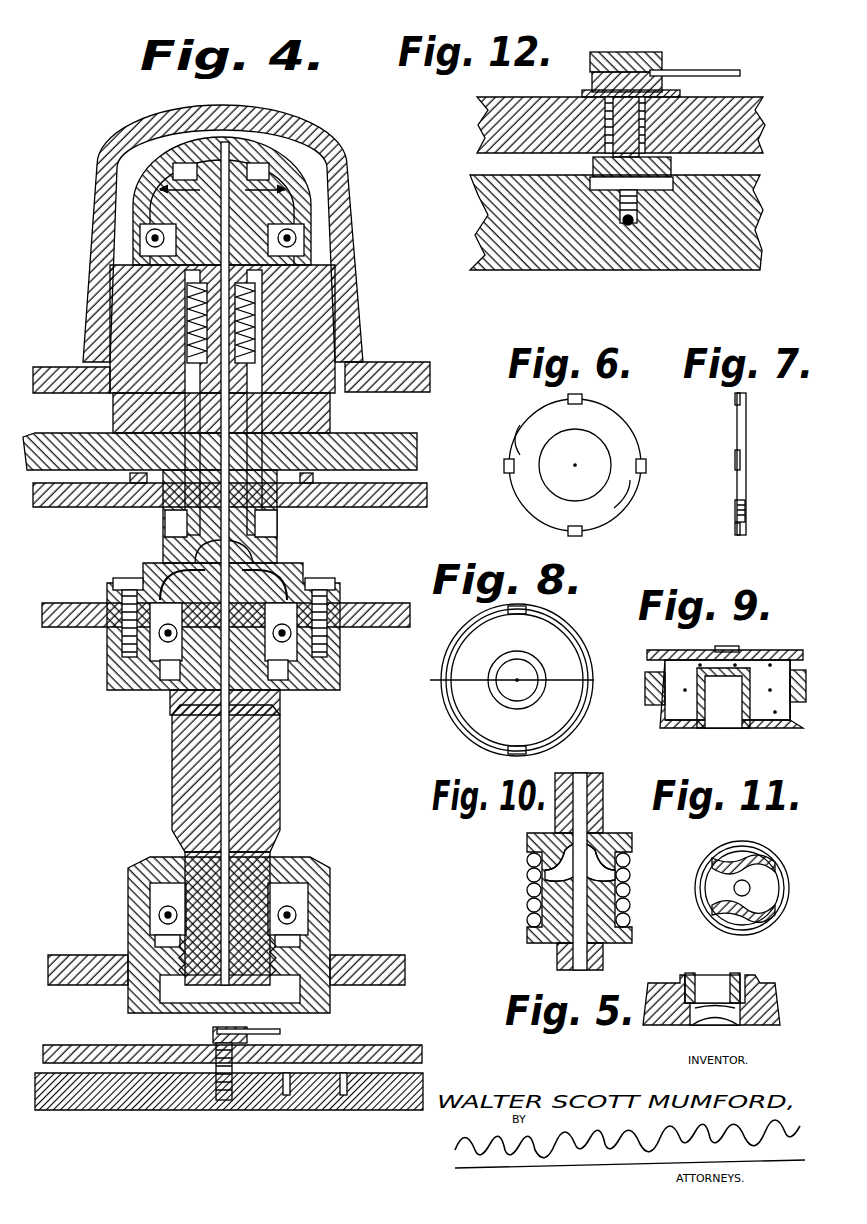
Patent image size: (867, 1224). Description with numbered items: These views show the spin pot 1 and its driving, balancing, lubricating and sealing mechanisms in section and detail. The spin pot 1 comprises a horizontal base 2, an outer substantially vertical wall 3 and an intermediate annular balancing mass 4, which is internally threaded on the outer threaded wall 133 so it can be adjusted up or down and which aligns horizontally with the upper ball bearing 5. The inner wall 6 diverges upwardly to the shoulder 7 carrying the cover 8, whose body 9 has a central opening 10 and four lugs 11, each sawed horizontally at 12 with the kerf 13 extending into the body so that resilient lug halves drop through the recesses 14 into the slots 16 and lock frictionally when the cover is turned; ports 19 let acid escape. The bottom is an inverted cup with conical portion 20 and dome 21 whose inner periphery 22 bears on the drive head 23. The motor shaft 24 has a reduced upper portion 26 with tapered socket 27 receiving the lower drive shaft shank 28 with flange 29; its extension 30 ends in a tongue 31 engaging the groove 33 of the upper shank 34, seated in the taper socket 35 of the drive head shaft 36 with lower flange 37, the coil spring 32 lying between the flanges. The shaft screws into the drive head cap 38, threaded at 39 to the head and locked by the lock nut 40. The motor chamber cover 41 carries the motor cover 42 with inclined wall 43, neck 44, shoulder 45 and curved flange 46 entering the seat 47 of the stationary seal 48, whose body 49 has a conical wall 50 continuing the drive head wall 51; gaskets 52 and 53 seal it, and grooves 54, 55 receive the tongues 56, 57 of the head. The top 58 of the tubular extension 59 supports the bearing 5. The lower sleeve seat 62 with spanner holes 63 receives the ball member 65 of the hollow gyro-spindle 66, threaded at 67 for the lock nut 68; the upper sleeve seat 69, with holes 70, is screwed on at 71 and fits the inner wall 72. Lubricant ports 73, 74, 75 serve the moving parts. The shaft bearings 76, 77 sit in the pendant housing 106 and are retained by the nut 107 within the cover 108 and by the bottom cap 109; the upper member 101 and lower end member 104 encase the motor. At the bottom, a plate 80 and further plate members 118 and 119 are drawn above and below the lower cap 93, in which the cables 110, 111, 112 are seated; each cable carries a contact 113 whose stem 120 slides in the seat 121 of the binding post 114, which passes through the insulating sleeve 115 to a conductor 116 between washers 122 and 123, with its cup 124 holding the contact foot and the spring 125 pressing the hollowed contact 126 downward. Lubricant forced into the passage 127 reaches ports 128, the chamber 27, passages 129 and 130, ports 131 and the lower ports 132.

In FIG. 9, the spin pot 1 is at (650, 655).
In FIG. 4, the horizontal base 2 is at (400, 390).
In FIG. 8, the horizontal base 2 is at (535, 718).
In FIG. 9, the horizontal base 2 is at (710, 700).
In FIG. 8, the outer substantially vertical wall 3 is at (470, 630).
In FIG. 9, the outer substantially vertical wall 3 is at (662, 725).
In FIG. 8, the annular balancing mass 4 is at (578, 645).
In FIG. 9, the annular balancing mass 4 is at (645, 690).
In FIG. 4, the upper ball bearing 5 is at (120, 200).
In FIG. 6, the inner wall 6 is at (612, 415).
In FIG. 8, the inner wall 6 is at (498, 705).
In FIG. 9, the inner wall 6 is at (730, 687).
In FIG. 8, the annular ledge or shoulder 7 is at (470, 700).
In FIG. 9, the annular ledge or shoulder 7 is at (672, 650).
In FIG. 7, the spin pot cover 8 is at (749, 464).
In FIG. 6, the cover body 9 is at (604, 500).
In FIG. 7, the cover body 9 is at (746, 495).
In FIG. 8, the cover body 9 is at (520, 675).
In FIG. 6, the central opening 10 is at (592, 435).
In FIG. 10, the central opening 10 is at (543, 871).
In FIG. 6, the lugs 11 is at (582, 398).
In FIG. 7, the lugs 11 is at (746, 460).
In FIG. 10, the lugs 11 is at (527, 882).
In FIG. 7, the horizontal saw cut 12 is at (746, 395).
In FIG. 6, the kerf extension 13 is at (520, 425).
In FIG. 8, the vertical recesses 14 is at (516, 614).
In FIG. 9, the vertical recesses 14 is at (652, 650).
In FIG. 8, the horizontal slots 16 is at (526, 610).
In FIG. 9, the horizontal slots 16 is at (730, 648).
In FIG. 9, the ports 19 is at (795, 705).
In FIG. 4, the conical upwardly converging portion 20 is at (95, 175).
In FIG. 8, the conical upwardly converging portion 20 is at (540, 690).
In FIG. 9, the conical upwardly converging portion 20 is at (700, 728).
In FIG. 4, the dome shaped portion 21 is at (222, 140).
In FIG. 8, the dome shaped portion 21 is at (517, 680).
In FIG. 9, the dome shaped portion 21 is at (723, 698).
In FIG. 4, the inner periphery 22 is at (395, 364).
In FIG. 9, the inner periphery 22 is at (720, 730).
In FIG. 4, the drive head 23 is at (340, 220).
In FIG. 4, the motor shaft 24 is at (282, 830).
In FIG. 4, the reduced upper portion of motor shaft 26 is at (278, 530).
In FIG. 4, the tapered seat or socket 27 is at (170, 510).
In FIG. 4, the lower drive shaft shank 28 is at (140, 478).
In FIG. 10, the lower drive shaft shank 28 is at (527, 940).
In FIG. 4, the flange 29 is at (130, 420).
In FIG. 10, the flange 29 is at (632, 925).
In FIG. 4, the extension 30 is at (340, 305).
In FIG. 10, the extension 30 is at (527, 915).
In FIG. 4, the tongue 31 is at (110, 320).
In FIG. 10, the tongue 31 is at (632, 855).
In FIG. 11, the tongue 31 is at (782, 898).
In FIG. 4, the coil spring 32 is at (70, 368).
In FIG. 10, the coil spring 32 is at (527, 852).
In FIG. 11, the coil spring 32 is at (782, 862).
In FIG. 4, the groove 33 is at (330, 286).
In FIG. 10, the groove 33 is at (595, 830).
In FIG. 4, the upper drive shaft shank 34 is at (330, 185).
In FIG. 10, the upper drive shaft shank 34 is at (592, 778).
In FIG. 4, the taper socket 35 is at (300, 110).
In FIG. 4, the drive head shaft 36 is at (340, 170).
In FIG. 4, the lower flange 37 is at (292, 135).
In FIG. 10, the lower flange 37 is at (628, 840).
In FIG. 4, the drive head cap 38 is at (160, 160).
In FIG. 4, the threaded engagement 39 is at (345, 190).
In FIG. 4, the lock nut 40 is at (318, 118).
In FIG. 4, the upper metallic plate or disc 41 is at (160, 512).
In FIG. 4, the motor cover 42 is at (115, 400).
In FIG. 4, the inclined top wall 43 is at (145, 465).
In FIG. 4, the neck 44 is at (320, 400).
In FIG. 4, the inner annular shoulder 45 is at (404, 330).
In FIG. 4, the outer annular flange 46 is at (335, 325).
In FIG. 4, the bottom groove or seat 47 is at (350, 282).
In FIG. 5, the bottom groove or seat 47 is at (655, 1025).
In FIG. 4, the seal 48 is at (150, 300).
In FIG. 5, the seal 48 is at (780, 1000).
In FIG. 4, the body portion 49 is at (160, 290).
In FIG. 5, the body portion 49 is at (648, 985).
In FIG. 4, the outer conical wall 50 is at (160, 318).
In FIG. 5, the outer conical wall 50 is at (648, 1020).
In FIG. 4, the wall of drive head 51 is at (112, 165).
In FIG. 4, the lower annular gasket 52 is at (165, 338).
In FIG. 4, the upper gasket 53 is at (120, 300).
In FIG. 4, the inner upper concentric groove 54 is at (125, 265).
In FIG. 5, the inner upper concentric groove 54 is at (748, 978).
In FIG. 4, the outer upper concentric groove 55 is at (335, 268).
In FIG. 5, the outer upper concentric groove 55 is at (770, 983).
In FIG. 4, the inner annular tongue 56 is at (118, 210).
In FIG. 4, the outer annular tongue 57 is at (120, 235).
In FIG. 4, the top of tubular extension 58 is at (325, 215).
In FIG. 5, the top of tubular extension 58 is at (728, 975).
In FIG. 5, the central hollow tubular extension 59 is at (690, 975).
In FIG. 4, the lower sleeve seat 62 is at (335, 440).
In FIG. 4, the bottom holes 63 is at (278, 515).
In FIG. 4, the ball member 65 is at (118, 270).
In FIG. 4, the gyro-spindle 66 is at (345, 200).
In FIG. 4, the threaded upper portion 67 is at (148, 152).
In FIG. 4, the lock nut 68 is at (122, 170).
In FIG. 4, the upper sleeve seat 69 is at (430, 395).
In FIG. 4, the holes 70 is at (416, 450).
In FIG. 4, the screw connection 71 is at (365, 505).
In FIG. 4, the inner wall of seal 72 is at (345, 300).
In FIG. 5, the inner wall of seal 72 is at (735, 1025).
In FIG. 4, the lubricant port 73 is at (152, 200).
In FIG. 4, the lubricant port 74 is at (345, 240).
In FIG. 4, the lubricant port 75 is at (345, 262).
In FIG. 5, the lubricant port 75 is at (700, 1025).
In FIG. 4, the upper ball bearing of motor shaft 76 is at (125, 665).
In FIG. 4, the lower ball bearing of motor shaft 77 is at (300, 905).
In FIG. 4, the plate 80 is at (420, 1050).
In FIG. 12, the plate 80 is at (478, 125).
In FIG. 4, the lower closure or cap 93 is at (425, 1090).
In FIG. 12, the lower closure or cap 93 is at (750, 225).
In FIG. 4, the upper member 101 is at (350, 625).
In FIG. 4, the lower end member 104 is at (405, 965).
In FIG. 4, the pendant housing 106 is at (340, 655).
In FIG. 4, the nut 107 is at (300, 595).
In FIG. 4, the cover 108 is at (280, 575).
In FIG. 4, the bottom cap 109 is at (330, 1005).
In FIG. 4, the cable 110 is at (230, 1100).
In FIG. 4, the cable 111 is at (290, 1100).
In FIG. 4, the cable 112 is at (345, 1100).
In FIG. 12, the cable 112 is at (625, 230).
In FIG. 4, the contact 113 is at (222, 1100).
In FIG. 12, the contact 113 is at (700, 270).
In FIG. 4, the binding post 114 is at (240, 1100).
In FIG. 12, the binding post 114 is at (625, 60).
In FIG. 12, the insulating sleeve 115 is at (735, 100).
In FIG. 4, the conductor 116 is at (280, 1032).
In FIG. 12, the conductor 116 is at (735, 70).
In FIG. 4, the plate 118 is at (160, 1100).
In FIG. 4, the plate 119 is at (95, 1100).
In FIG. 12, the plate 119 is at (605, 225).
In FIG. 12, the stem 120 is at (662, 75).
In FIG. 12, the seat 121 is at (640, 65).
In FIG. 4, the upper insulating washer 122 is at (213, 1040).
In FIG. 12, the upper insulating washer 122 is at (582, 93).
In FIG. 4, the lower insulating washer 123 is at (210, 1100).
In FIG. 12, the lower insulating washer 123 is at (593, 168).
In FIG. 4, the cup shaped lower portion 124 is at (218, 1100).
In FIG. 12, the cup shaped lower portion 124 is at (671, 168).
In FIG. 12, the spring 125 is at (755, 128).
In FIG. 12, the hollow of contact 126 is at (652, 200).
In FIG. 4, the lubricant passage 127 is at (228, 733).
In FIG. 4, the ports 128 is at (215, 560).
In FIG. 4, the passage 129 is at (100, 445).
In FIG. 10, the passage 129 is at (560, 960).
In FIG. 11, the passage 129 is at (750, 865).
In FIG. 4, the passage 130 is at (262, 140).
In FIG. 4, the ports 131 is at (188, 140).
In FIG. 4, the lower ports 132 is at (150, 258).
In FIG. 9, the outer threaded wall 133 is at (660, 712).